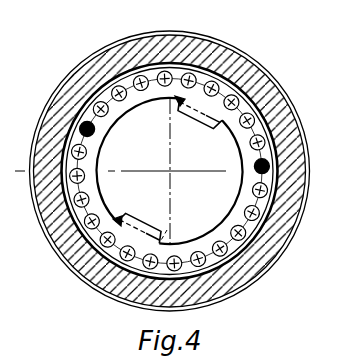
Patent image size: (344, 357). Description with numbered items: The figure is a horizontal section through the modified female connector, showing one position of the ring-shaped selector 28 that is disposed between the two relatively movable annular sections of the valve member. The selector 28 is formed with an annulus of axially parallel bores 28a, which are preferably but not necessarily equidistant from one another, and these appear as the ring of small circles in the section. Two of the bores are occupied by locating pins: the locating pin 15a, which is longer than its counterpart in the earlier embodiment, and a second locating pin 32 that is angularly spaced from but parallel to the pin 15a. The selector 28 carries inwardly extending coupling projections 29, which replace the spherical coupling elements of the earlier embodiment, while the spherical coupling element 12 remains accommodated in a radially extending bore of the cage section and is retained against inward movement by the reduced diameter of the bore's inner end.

The spherical coupling element 12 is at (187, 140).
The locating pin 15a is at (86, 122).
The ring-shaped selector 28 is at (60, 158).
The axially parallel bores 28a is at (233, 84).
The coupling projections 29 is at (184, 98).
The second locating pin 32 is at (264, 160).